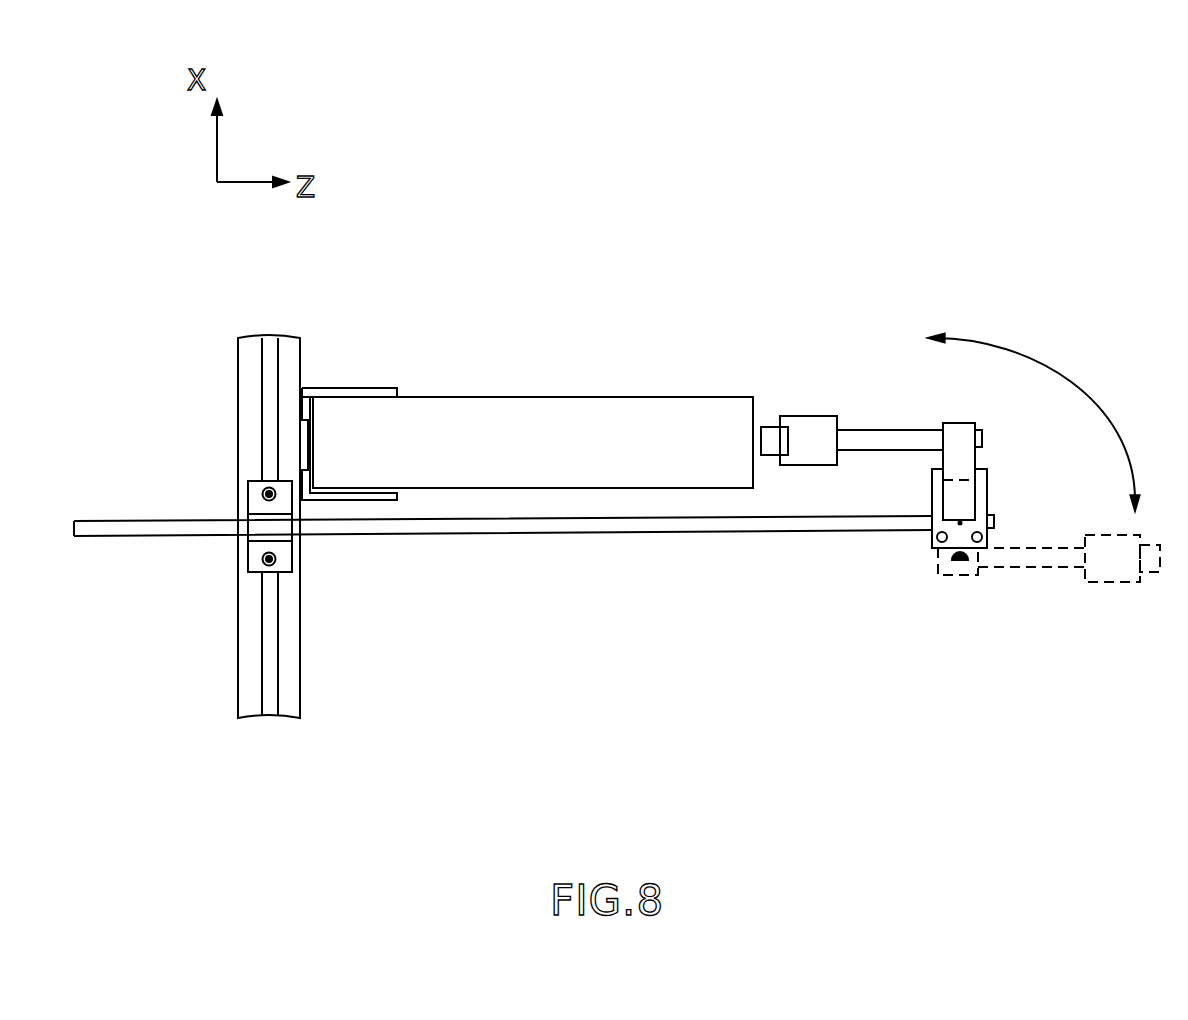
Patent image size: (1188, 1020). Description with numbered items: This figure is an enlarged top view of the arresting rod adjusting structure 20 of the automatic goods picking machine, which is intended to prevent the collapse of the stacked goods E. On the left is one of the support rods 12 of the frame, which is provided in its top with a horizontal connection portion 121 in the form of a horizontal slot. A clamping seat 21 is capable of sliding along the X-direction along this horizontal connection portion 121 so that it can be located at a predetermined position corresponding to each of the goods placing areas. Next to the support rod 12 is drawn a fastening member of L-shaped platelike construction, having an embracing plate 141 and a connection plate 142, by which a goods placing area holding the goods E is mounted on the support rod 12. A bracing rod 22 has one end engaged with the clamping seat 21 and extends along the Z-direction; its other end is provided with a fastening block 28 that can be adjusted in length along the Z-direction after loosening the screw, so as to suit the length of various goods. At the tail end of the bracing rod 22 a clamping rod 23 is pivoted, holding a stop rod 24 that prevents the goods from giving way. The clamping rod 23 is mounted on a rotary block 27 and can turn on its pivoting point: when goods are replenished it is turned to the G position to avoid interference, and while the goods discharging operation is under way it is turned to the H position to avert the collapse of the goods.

The support rod 12 is at (300, 643).
The horizontal connection portion 121 is at (272, 693).
The clamping seat 21 is at (254, 551).
The bracing rod 22 is at (456, 524).
The embracing plate 141 is at (382, 392).
The connection plate 142 is at (305, 390).
The goods E is at (672, 410).
The stop rod 24 is at (774, 427).
The clamping rod 23 is at (815, 430).
The rotary block 27 is at (967, 461).
The fastening block 28 is at (983, 498).
The arresting rod adjusting structure 20 is at (655, 618).
The G position G is at (1127, 538).
The H position H is at (1030, 403).